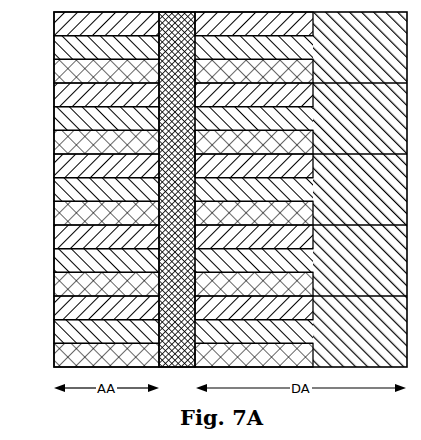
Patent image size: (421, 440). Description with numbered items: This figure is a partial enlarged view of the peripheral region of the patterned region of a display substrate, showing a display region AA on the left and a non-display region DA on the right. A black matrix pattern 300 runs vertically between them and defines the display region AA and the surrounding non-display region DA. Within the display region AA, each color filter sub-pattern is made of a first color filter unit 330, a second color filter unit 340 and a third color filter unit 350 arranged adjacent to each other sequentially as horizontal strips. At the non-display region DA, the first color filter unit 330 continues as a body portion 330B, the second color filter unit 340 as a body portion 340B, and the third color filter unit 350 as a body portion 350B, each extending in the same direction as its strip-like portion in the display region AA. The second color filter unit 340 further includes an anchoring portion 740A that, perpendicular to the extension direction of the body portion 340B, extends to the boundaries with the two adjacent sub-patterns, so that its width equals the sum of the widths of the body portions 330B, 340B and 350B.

The first color filter unit 330 is at (90, 166).
The second color filter unit 340 is at (90, 190).
The third color filter unit 350 is at (90, 213).
The body portion 330B is at (254, 166).
The body portion 340B is at (254, 190).
The body portion 350B is at (254, 213).
The anchoring portion 740A is at (360, 189).
The black matrix pattern 300 is at (177, 189).